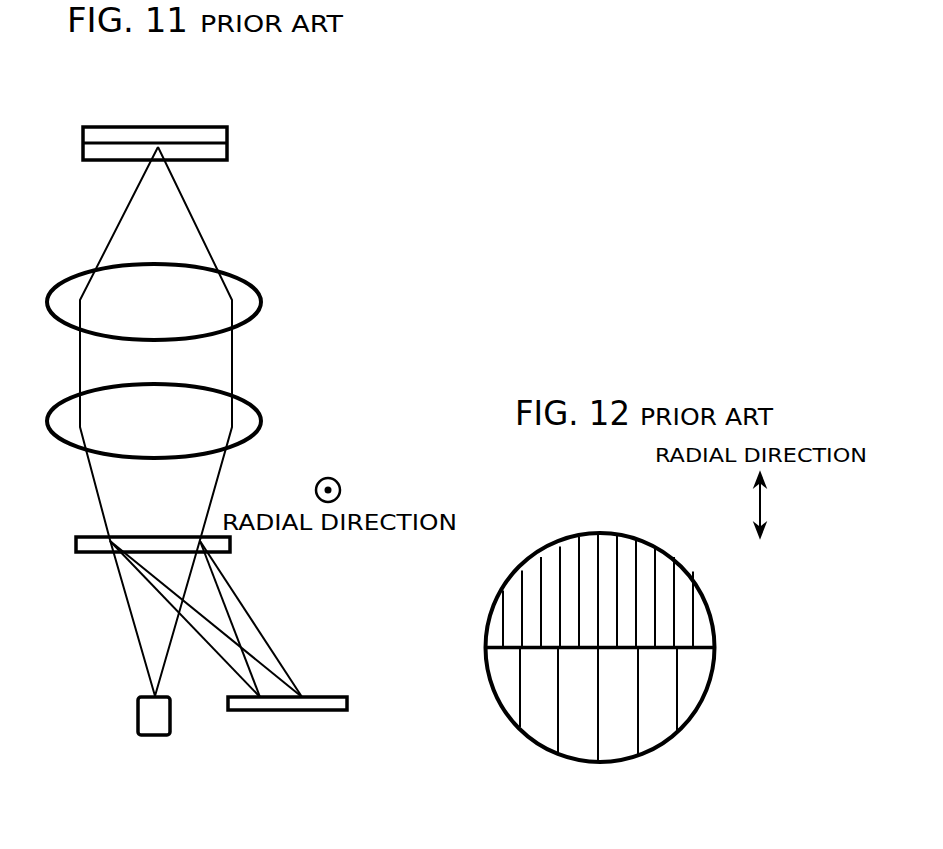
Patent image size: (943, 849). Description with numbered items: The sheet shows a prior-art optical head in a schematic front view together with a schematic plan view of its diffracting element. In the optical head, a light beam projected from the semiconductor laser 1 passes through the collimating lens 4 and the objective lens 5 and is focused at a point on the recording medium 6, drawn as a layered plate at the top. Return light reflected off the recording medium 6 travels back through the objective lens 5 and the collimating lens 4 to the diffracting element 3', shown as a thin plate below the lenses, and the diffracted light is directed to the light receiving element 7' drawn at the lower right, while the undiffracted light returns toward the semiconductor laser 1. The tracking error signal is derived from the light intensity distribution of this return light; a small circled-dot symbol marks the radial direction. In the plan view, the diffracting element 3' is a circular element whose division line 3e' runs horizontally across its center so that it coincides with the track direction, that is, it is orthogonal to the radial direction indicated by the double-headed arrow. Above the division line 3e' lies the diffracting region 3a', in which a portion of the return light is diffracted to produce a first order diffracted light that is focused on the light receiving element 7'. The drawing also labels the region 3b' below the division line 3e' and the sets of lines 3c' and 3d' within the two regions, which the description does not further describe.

In FIG. 11, the semiconductor laser 1 is at (147, 717).
In FIG. 11, the diffracting element 3' is at (143, 576).
In FIG. 12, the diffracting element 3' is at (566, 647).
In FIG. 11, the collimating lens 4 is at (70, 427).
In FIG. 11, the objective lens 5 is at (68, 305).
In FIG. 11, the recording medium 6 is at (207, 153).
In FIG. 11, the light receiving element 7' is at (287, 672).
In FIG. 12, the diffracting region 3a' is at (598, 566).
In FIG. 12, the second grating region 3b' is at (598, 732).
In FIG. 12, the grating lines of first region 3c' is at (721, 601).
In FIG. 12, the grating lines of second region 3d' is at (697, 734).
In FIG. 12, the division line 3e' is at (554, 659).